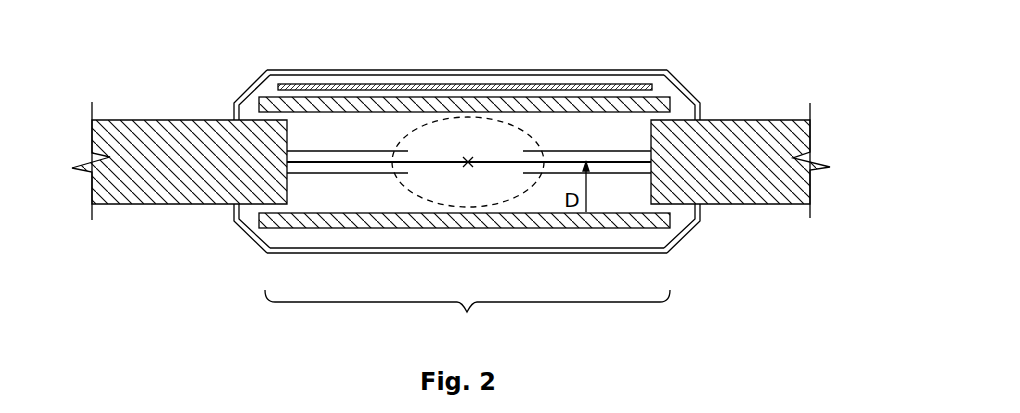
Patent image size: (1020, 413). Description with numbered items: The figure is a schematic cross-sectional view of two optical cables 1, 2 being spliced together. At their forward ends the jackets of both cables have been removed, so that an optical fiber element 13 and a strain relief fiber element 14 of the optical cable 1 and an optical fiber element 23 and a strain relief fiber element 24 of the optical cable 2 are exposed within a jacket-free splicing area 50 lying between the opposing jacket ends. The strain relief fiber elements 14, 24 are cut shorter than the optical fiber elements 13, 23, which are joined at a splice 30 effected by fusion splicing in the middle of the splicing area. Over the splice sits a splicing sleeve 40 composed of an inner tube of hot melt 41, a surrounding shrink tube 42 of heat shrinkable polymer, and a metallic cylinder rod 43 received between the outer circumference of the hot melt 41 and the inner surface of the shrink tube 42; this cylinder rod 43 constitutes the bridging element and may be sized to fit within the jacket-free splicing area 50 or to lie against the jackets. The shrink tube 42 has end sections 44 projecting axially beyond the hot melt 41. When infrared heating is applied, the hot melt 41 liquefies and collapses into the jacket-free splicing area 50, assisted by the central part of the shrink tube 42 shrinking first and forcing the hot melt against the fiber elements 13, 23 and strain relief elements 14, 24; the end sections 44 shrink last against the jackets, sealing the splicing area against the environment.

The optical cable 1 is at (116, 100).
The optical cable 2 is at (777, 111).
The optical fiber element 13 is at (346, 151).
The strain relief fiber element 14 is at (377, 149).
The optical fiber element 23 is at (587, 214).
The strain relief fiber element 24 is at (608, 173).
The splice 30 is at (466, 151).
The splicing sleeve 40 is at (485, 145).
The hot melt 41 is at (658, 96).
The shrink tube 42 is at (557, 71).
The cylinder rod 43 is at (591, 84).
The end sections 44 is at (244, 75).
The jacket-free splicing area 50 is at (467, 315).